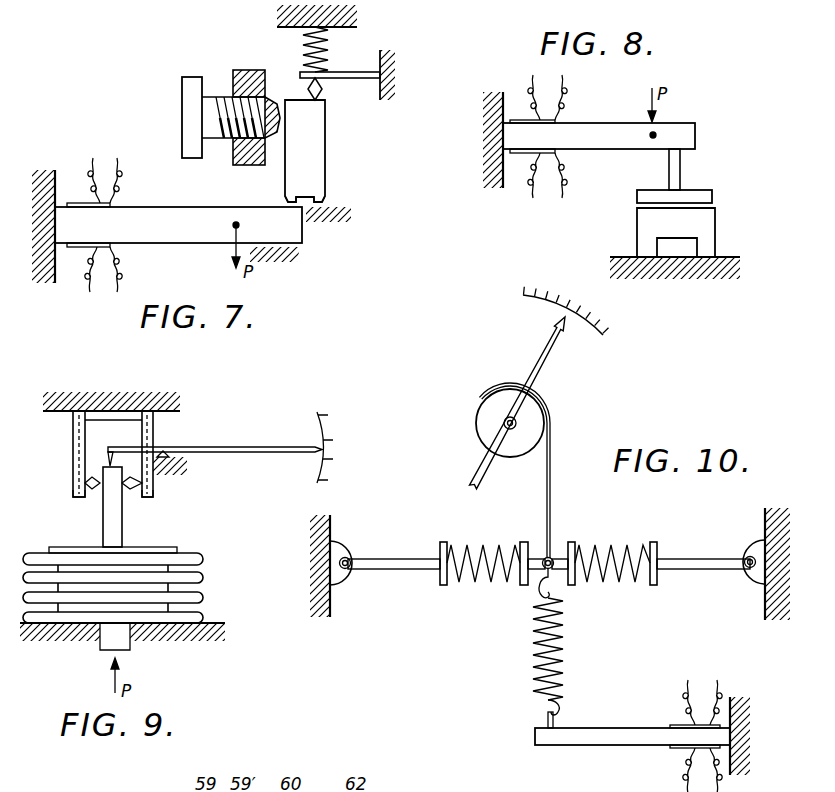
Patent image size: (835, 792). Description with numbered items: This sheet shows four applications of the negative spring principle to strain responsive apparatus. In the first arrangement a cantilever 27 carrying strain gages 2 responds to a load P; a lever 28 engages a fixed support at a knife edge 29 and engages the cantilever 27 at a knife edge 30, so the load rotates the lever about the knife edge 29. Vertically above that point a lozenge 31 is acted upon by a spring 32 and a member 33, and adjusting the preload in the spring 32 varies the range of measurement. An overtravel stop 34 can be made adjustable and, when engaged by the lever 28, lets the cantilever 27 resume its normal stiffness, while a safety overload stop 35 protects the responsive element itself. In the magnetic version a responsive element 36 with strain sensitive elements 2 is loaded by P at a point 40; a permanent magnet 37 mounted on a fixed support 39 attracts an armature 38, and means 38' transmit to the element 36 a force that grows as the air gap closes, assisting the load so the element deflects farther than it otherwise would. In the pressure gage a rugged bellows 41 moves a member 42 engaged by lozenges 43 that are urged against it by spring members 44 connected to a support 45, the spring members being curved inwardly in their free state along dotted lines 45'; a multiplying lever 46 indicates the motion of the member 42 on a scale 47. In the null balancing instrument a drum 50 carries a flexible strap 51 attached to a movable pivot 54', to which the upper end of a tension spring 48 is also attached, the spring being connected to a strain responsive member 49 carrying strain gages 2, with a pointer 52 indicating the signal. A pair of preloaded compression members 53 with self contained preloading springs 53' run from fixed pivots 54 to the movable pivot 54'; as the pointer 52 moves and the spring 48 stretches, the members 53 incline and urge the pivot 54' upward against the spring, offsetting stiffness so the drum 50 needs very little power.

In FIG. 8, the strain gages 2 is at (525, 121).
In FIG. 10, the strain gages 2 is at (683, 725).
In FIG. 7, the cantilever 27 is at (193, 207).
In FIG. 7, the lever 28 is at (313, 145).
In FIG. 7, the knife edge 29 is at (321, 203).
In FIG. 7, the knife edge 30 is at (290, 205).
In FIG. 7, the lozenge 31 is at (322, 92).
In FIG. 7, the spring 32 is at (302, 49).
In FIG. 7, the member 33 is at (347, 74).
In FIG. 7, the overtravel stop 34 is at (212, 102).
In FIG. 7, the safety overload stop 35 is at (288, 248).
In FIG. 8, the responsive element 36 is at (607, 135).
In FIG. 8, the permanent magnet 37 is at (707, 232).
In FIG. 8, the armature 38 is at (669, 182).
In FIG. 8, the means 38' is at (695, 169).
In FIG. 8, the fixed support 39 is at (623, 257).
In FIG. 8, the load point 40 is at (656, 133).
In FIG. 9, the bellows 41 is at (205, 578).
In FIG. 9, the member 42 is at (118, 530).
In FIG. 9, the lozenges 43 is at (96, 489).
In FIG. 9, the spring members 44 is at (73, 454).
In FIG. 9, the support 45 is at (111, 385).
In FIG. 9, the dotted lines 45' is at (118, 490).
In FIG. 9, the multiplying lever 46 is at (247, 452).
In FIG. 9, the scale 47 is at (332, 421).
In FIG. 10, the spring member 48 is at (563, 648).
In FIG. 10, the strain responsive member 49 is at (632, 728).
In FIG. 10, the drum 50 is at (483, 430).
In FIG. 10, the flexible belt or strap 51 is at (553, 495).
In FIG. 10, the pointer 52 is at (566, 328).
In FIG. 10, the preloaded compression members 53 is at (549, 588).
In FIG. 10, the preloading springs 53' is at (548, 548).
In FIG. 10, the fixed pivots 54 is at (547, 574).
In FIG. 10, the movable pivot 54' is at (568, 540).